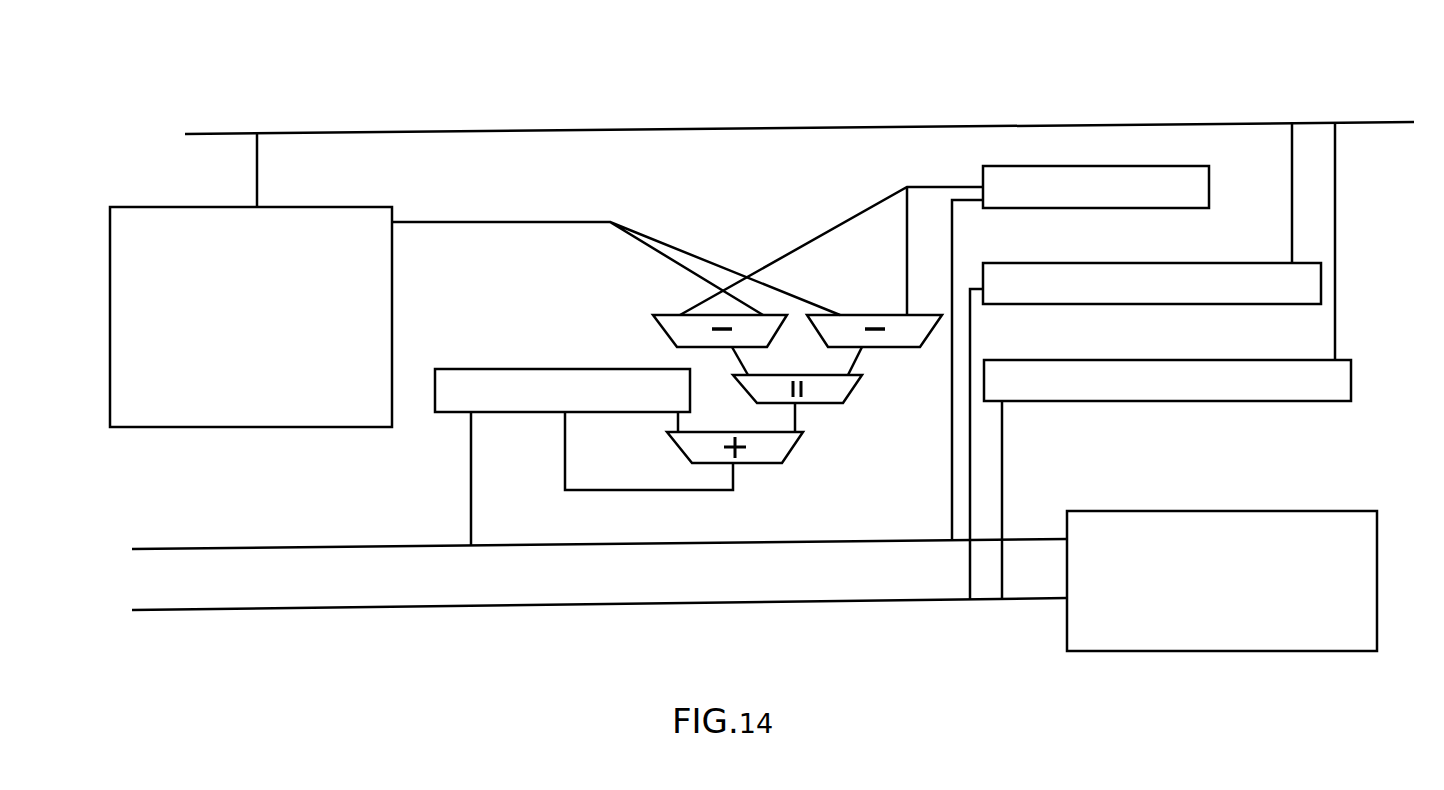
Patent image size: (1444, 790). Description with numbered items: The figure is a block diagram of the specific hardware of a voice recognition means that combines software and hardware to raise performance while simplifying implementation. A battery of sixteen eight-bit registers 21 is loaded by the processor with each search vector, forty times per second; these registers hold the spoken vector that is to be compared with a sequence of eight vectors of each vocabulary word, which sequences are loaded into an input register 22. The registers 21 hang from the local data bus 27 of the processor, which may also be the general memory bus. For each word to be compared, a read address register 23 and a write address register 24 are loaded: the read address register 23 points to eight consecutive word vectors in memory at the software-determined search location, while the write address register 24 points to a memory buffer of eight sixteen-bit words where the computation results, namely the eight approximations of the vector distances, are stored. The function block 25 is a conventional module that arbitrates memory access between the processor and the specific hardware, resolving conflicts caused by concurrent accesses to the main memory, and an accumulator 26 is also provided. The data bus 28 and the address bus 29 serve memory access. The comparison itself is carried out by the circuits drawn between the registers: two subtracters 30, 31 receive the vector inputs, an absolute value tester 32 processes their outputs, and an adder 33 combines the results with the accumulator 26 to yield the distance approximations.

The battery of sixteen eight-bit registers 21 is at (108, 250).
The input register 22 is at (1135, 166).
The read address register 23 is at (1321, 273).
The write address register 24 is at (1318, 401).
The function block 25 is at (1318, 651).
The accumulator 26 is at (470, 369).
The local data bus 27 is at (298, 134).
The data bus 28 is at (893, 540).
The address bus 29 is at (772, 601).
The subtracter 30 is at (700, 315).
The subtracter 31 is at (862, 315).
The absolute value tester 32 is at (858, 385).
The adder 33 is at (797, 445).